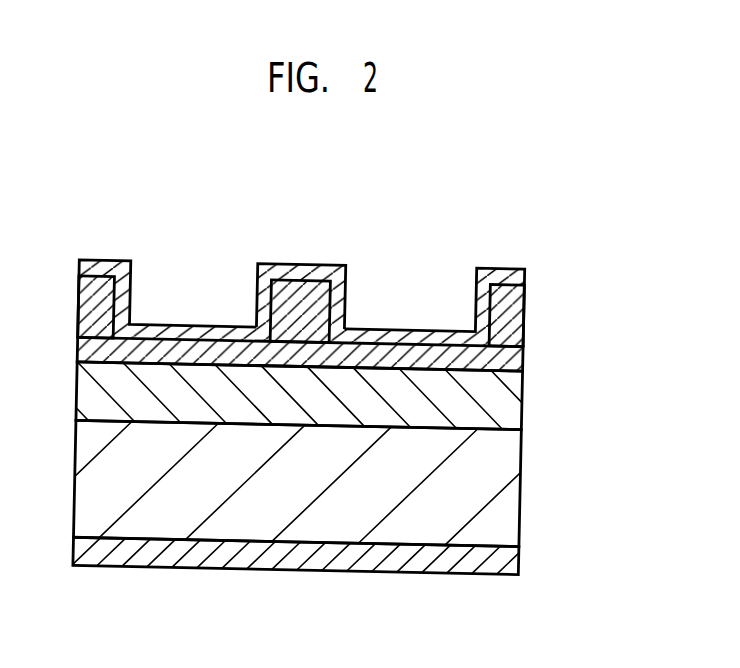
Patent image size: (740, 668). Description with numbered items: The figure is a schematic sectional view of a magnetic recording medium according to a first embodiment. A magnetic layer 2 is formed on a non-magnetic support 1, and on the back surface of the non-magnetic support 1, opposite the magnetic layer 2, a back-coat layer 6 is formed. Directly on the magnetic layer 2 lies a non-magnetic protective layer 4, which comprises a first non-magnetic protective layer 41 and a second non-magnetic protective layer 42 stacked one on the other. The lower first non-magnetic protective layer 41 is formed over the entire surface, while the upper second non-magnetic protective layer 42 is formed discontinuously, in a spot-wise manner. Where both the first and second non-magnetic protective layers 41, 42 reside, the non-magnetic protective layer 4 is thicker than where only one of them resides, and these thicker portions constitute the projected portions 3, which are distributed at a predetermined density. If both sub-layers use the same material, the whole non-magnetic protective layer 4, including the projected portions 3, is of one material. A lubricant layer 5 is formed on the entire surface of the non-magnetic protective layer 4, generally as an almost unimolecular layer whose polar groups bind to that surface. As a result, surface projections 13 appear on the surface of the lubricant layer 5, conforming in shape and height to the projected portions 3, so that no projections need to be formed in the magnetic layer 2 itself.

The non-magnetic support 1 is at (505, 487).
The magnetic layer 2 is at (505, 405).
The projected portions 3 is at (297, 285).
The non-magnetic protective layer 4 is at (360, 327).
The first non-magnetic protective layer 41 is at (504, 362).
The second non-magnetic protective layer 42 is at (327, 311).
The lubricant layer 5 is at (508, 282).
The back-coat layer 6 is at (505, 563).
The surface projections 13 is at (303, 266).